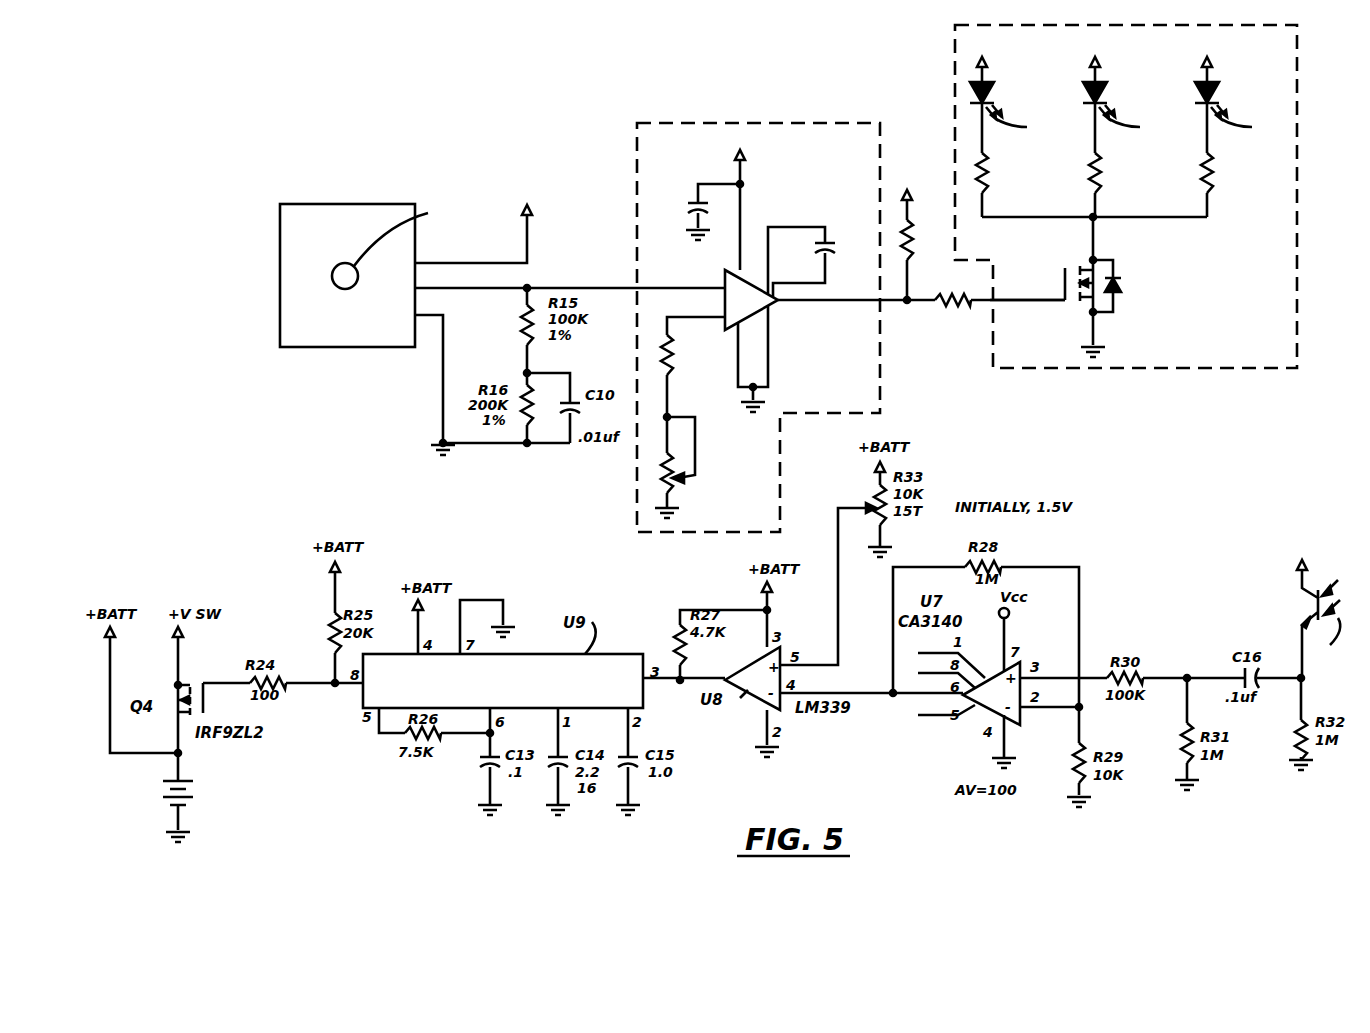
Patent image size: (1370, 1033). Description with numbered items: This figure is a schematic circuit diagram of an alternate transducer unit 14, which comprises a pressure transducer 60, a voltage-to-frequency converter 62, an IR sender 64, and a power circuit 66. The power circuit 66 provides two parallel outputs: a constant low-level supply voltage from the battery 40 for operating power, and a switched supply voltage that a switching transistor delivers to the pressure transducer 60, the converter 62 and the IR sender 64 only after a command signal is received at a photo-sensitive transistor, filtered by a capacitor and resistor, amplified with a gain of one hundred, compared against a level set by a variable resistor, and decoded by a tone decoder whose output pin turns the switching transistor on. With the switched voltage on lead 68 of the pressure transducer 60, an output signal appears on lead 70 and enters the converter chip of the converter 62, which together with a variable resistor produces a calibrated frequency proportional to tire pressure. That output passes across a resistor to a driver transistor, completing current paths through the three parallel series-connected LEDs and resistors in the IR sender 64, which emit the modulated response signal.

The transducer unit 14 is at (320, 150).
The pressure transducer 60 is at (280, 290).
The voltage-to-frequency converter 62 is at (640, 120).
The IR sender 64 is at (955, 42).
The power circuit 66 is at (1192, 532).
The lead 68 is at (528, 243).
The lead 70 is at (500, 290).
The battery 40 is at (158, 787).